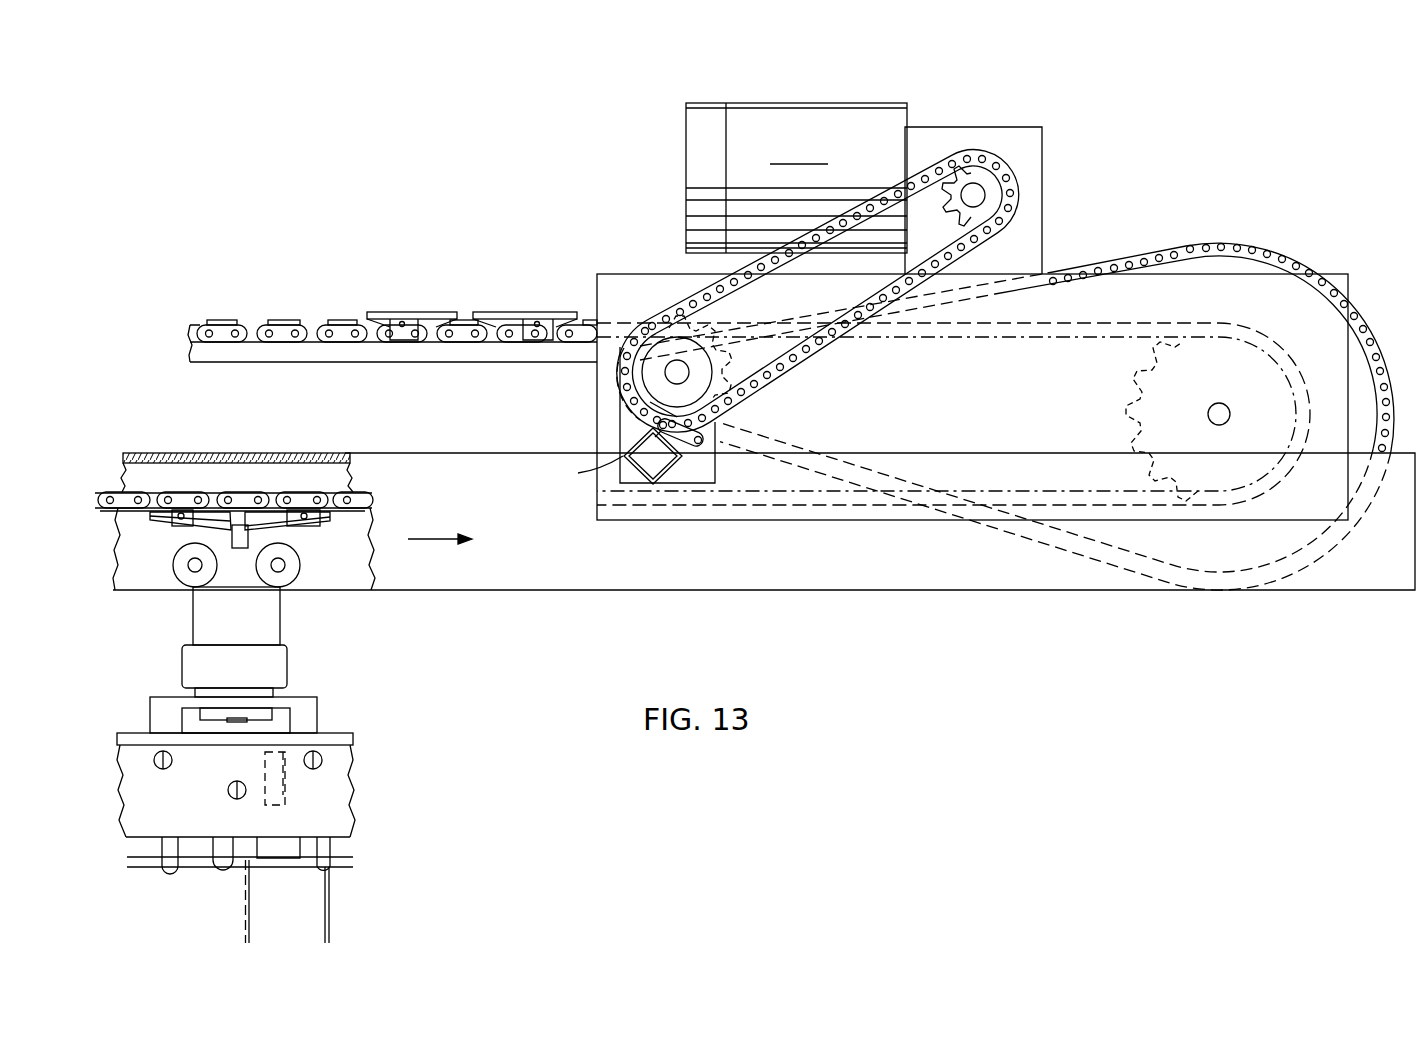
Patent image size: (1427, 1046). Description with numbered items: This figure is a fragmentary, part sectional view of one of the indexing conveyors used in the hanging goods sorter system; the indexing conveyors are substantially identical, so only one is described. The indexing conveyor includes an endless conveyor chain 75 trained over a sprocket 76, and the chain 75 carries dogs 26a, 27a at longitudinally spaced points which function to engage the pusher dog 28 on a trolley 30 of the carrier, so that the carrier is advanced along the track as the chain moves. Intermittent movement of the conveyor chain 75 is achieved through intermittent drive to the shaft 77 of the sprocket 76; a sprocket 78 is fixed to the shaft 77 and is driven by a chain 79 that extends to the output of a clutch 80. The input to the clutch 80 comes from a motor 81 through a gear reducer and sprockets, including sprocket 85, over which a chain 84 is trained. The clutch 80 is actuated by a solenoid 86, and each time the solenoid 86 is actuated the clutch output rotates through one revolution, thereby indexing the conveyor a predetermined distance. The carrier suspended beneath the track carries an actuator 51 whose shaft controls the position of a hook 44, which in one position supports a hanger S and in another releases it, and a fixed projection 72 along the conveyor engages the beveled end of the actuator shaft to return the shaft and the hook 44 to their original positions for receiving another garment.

The dog 26a is at (212, 525).
The dog 27a is at (283, 526).
The pusher dog 28 is at (237, 545).
The trolley 30 is at (289, 628).
The actuator 51 is at (359, 772).
The fixed projection 72 is at (287, 788).
The hook 44 is at (333, 868).
The hanger S is at (330, 927).
The endless conveyor chain 75 is at (340, 327).
The sprocket 76 is at (1125, 414).
The shaft 77 is at (1243, 388).
The sprocket 78 is at (1242, 262).
The chain 79 is at (1122, 250).
The clutch 80 is at (638, 398).
The motor 81 is at (823, 113).
The chain 84 is at (818, 228).
The sprocket 85 is at (713, 322).
The solenoid 86 is at (662, 480).